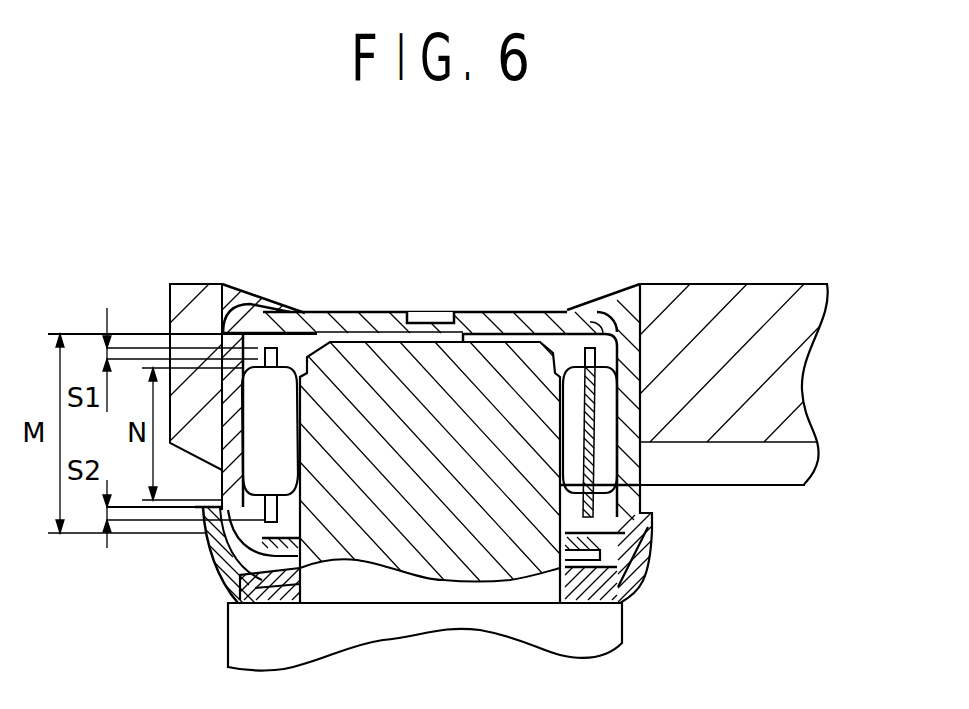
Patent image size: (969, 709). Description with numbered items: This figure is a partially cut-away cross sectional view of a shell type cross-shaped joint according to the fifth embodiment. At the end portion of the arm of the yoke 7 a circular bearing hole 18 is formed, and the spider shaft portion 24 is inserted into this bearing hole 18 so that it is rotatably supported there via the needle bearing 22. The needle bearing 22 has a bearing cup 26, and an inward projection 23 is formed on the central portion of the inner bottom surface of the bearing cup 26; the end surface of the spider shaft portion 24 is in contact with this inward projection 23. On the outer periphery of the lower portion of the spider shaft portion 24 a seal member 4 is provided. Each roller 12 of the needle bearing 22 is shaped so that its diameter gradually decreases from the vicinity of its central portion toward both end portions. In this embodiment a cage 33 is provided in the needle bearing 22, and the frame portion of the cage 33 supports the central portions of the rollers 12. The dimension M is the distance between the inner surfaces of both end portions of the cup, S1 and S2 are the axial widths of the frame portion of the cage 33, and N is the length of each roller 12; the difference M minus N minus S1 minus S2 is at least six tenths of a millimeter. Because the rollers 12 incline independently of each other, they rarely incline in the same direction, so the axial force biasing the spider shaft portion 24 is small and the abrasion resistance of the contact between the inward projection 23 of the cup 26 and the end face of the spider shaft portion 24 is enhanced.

The seal member 4 is at (650, 552).
The yoke 7 is at (725, 318).
The roller 12 is at (600, 457).
The bearing hole 18 is at (640, 303).
The needle bearing 22 is at (491, 300).
The inward projection 23 is at (432, 312).
The spider shaft portion 24 is at (318, 312).
The bearing cup 26 is at (372, 312).
The cage 33 is at (567, 312).